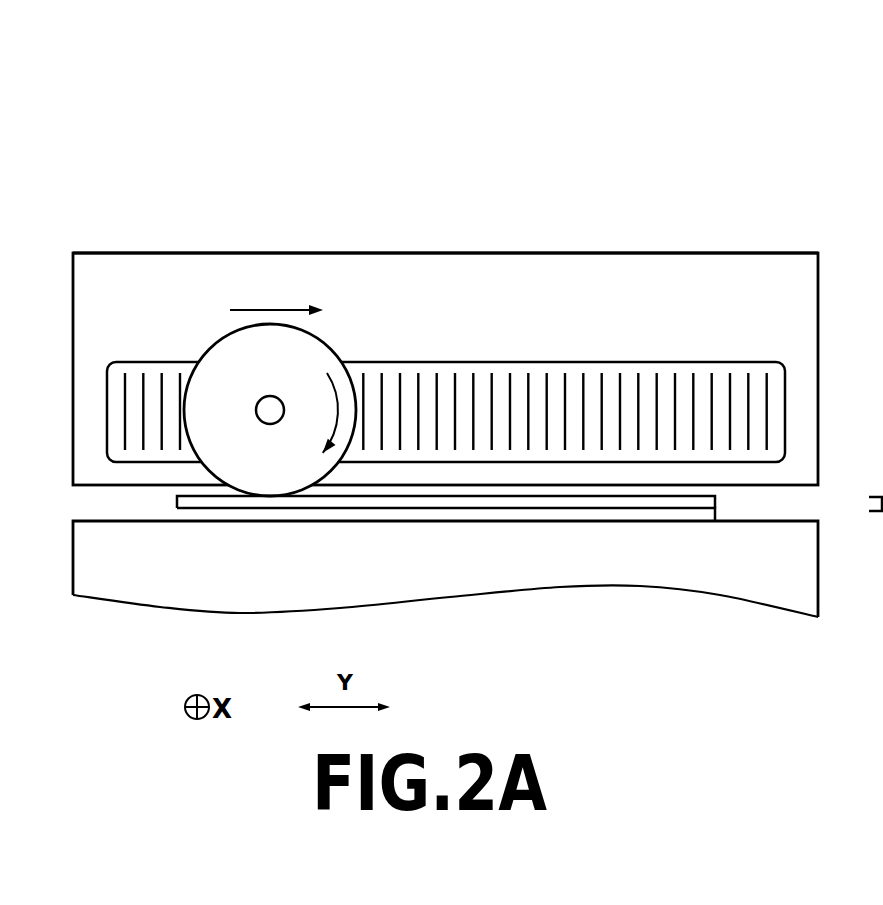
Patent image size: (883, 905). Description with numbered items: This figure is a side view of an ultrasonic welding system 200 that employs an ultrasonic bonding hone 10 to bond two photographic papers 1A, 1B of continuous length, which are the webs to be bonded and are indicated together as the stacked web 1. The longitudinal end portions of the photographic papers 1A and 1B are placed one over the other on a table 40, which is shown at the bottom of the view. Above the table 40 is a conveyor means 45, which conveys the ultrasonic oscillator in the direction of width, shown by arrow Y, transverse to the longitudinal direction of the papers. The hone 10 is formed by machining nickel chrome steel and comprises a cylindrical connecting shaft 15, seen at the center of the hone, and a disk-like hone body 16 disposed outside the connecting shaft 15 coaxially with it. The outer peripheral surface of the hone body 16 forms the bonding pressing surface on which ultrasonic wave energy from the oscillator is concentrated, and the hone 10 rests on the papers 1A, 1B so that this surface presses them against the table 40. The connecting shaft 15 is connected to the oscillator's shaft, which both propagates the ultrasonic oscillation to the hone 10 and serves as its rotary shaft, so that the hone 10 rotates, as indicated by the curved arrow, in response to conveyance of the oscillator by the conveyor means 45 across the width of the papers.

The ultrasonic welding system 200 is at (515, 135).
The conveyor means 45 is at (663, 260).
The ultrasonic bonding hone 10 is at (218, 343).
The connecting shaft 15 is at (270, 396).
The hone body 16 is at (313, 345).
The photographic paper 1A is at (716, 503).
The photographic paper 1B is at (716, 514).
The medium 1 is at (876, 504).
The table 40 is at (808, 592).